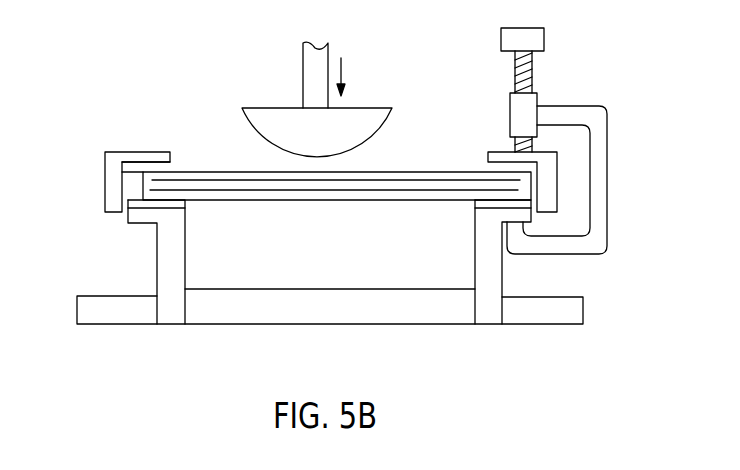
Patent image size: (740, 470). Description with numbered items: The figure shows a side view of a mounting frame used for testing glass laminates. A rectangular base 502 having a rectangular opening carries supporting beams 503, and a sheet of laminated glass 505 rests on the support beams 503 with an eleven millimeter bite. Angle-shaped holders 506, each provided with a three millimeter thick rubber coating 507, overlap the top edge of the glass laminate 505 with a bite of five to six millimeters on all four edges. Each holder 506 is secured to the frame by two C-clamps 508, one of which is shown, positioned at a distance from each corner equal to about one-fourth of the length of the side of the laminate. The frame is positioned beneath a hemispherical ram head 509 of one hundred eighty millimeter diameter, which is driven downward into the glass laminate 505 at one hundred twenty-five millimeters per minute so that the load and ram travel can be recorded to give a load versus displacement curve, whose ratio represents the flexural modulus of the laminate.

The rectangular base 502 is at (117, 318).
The supporting beams 503 is at (137, 233).
The sheet of laminated glass 505 is at (393, 169).
The angle-shaped holders 506 is at (106, 180).
The rubber coating 507 is at (137, 165).
The C-clamps 508 is at (606, 142).
The hemispherical ram head 509 is at (268, 122).